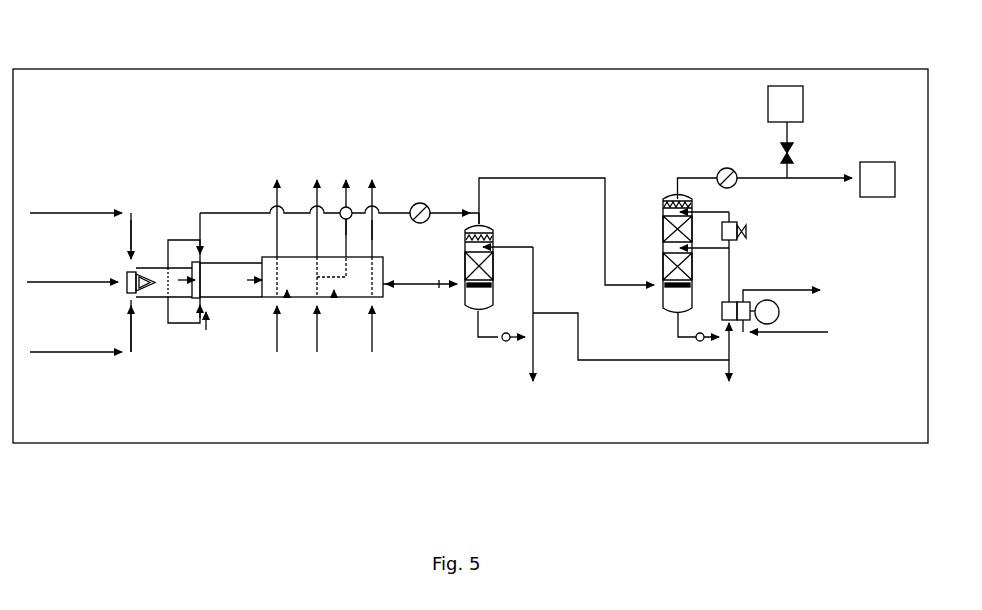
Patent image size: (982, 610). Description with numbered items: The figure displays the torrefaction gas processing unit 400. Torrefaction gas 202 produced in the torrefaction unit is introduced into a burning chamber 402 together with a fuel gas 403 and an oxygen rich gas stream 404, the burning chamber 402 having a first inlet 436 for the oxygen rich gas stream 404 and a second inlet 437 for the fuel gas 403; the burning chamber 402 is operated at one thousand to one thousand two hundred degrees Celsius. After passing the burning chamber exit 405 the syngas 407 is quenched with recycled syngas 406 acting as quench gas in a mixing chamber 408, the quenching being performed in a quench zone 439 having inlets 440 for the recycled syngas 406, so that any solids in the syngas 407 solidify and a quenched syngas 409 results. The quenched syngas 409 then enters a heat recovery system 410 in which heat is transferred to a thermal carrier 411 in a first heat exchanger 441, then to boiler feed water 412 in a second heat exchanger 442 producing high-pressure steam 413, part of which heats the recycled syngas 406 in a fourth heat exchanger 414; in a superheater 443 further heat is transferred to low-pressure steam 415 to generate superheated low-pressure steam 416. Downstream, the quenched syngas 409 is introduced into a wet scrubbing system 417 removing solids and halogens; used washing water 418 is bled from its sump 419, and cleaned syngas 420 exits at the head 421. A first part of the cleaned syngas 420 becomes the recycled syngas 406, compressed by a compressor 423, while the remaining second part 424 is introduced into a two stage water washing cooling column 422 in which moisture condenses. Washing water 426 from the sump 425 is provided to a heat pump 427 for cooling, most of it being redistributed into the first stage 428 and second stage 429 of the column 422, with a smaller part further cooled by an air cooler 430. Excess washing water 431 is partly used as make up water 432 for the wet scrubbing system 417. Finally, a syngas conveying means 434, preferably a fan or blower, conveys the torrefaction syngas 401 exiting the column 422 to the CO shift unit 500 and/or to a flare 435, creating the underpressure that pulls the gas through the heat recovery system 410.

The torrefaction gas 202 is at (78, 354).
The torrefaction gas processing unit 400 is at (803, 68).
The torrefaction syngas 401 is at (685, 175).
The burning chamber 402 is at (143, 300).
The fuel gas 403 is at (40, 284).
The oxygen rich gas stream 404 is at (65, 215).
The burning chamber exit 405 is at (208, 320).
The recycled syngas 406 is at (242, 212).
The syngas 407 is at (182, 258).
The mixing chamber 408 is at (242, 300).
The quenched syngas 409 is at (260, 278).
The heat recovery system 410 is at (305, 256).
The thermal carrier 411 is at (278, 192).
The boiler feed water 412 is at (320, 348).
The high-pressure steam 413 is at (320, 192).
The fourth heat exchanger 414 is at (348, 195).
The low-pressure steam 415 is at (373, 348).
The superheated low-pressure steam 416 is at (373, 215).
The wet scrubbing system 417 is at (493, 287).
The used washing water 418 is at (475, 318).
The sump 419 is at (470, 313).
The cleaned syngas 420 is at (480, 221).
The head 421 is at (487, 226).
The two stage water washing cooling column 422 is at (663, 205).
The compressor 423 is at (420, 203).
The second part of the cleaned syngas 424 is at (580, 180).
The sump 425 is at (667, 313).
The washing water 426 is at (675, 327).
The heat pump 427 is at (805, 313).
The first stage 428 is at (663, 265).
The second stage 429 is at (663, 227).
The air cooler 430 is at (735, 222).
The excess washing water 431 is at (730, 348).
The make up water 432 is at (675, 362).
The syngas conveying means 434 is at (722, 167).
The flare 435 is at (805, 93).
The first inlet 436 is at (133, 242).
The second inlet 437 is at (108, 285).
The quench zone 439 is at (730, 378).
The inlets 440 is at (199, 258).
The first heat exchanger 441 is at (288, 298).
The second heat exchanger 442 is at (336, 297).
The superheater 443 is at (387, 282).
The CO shift unit 500 is at (880, 197).